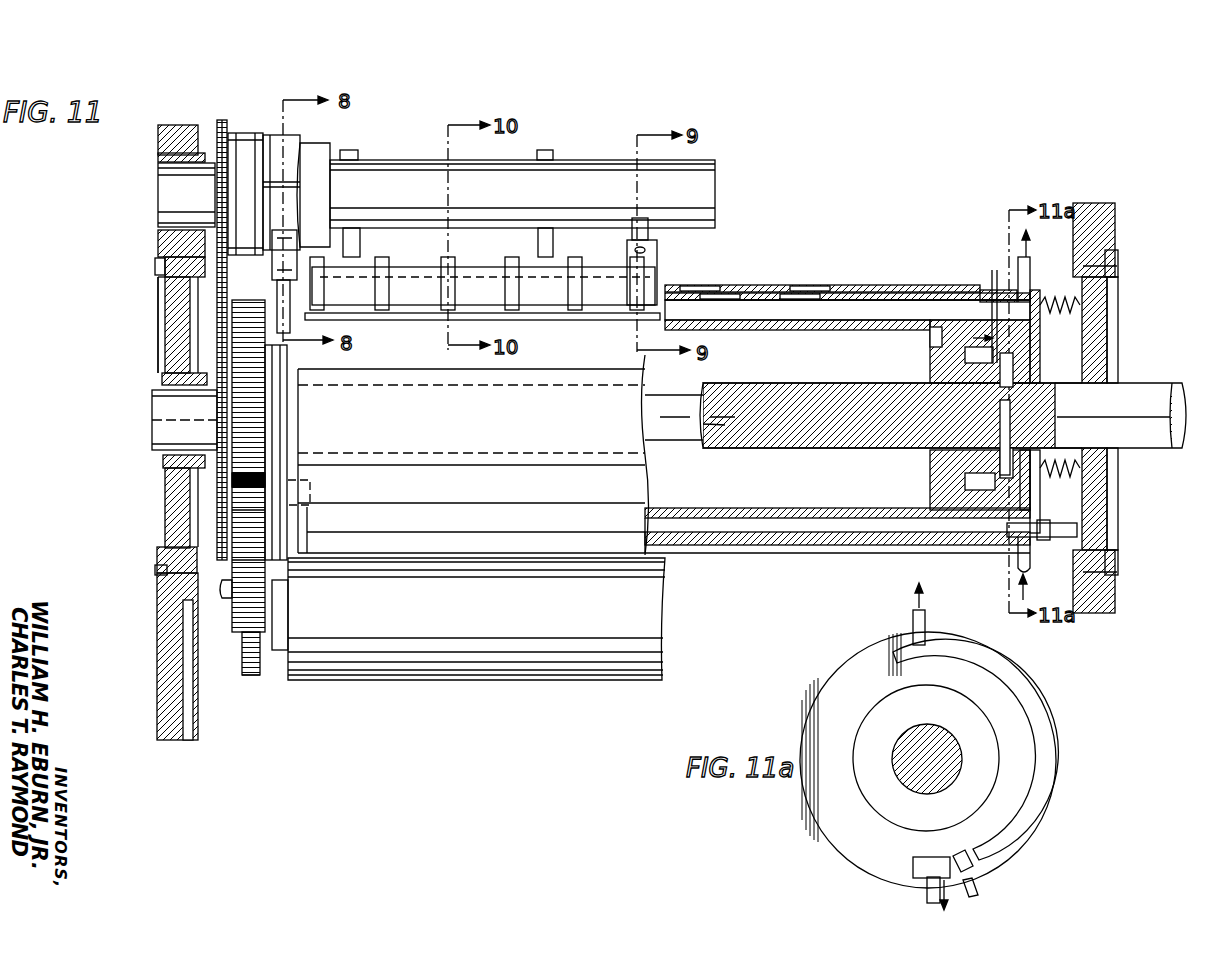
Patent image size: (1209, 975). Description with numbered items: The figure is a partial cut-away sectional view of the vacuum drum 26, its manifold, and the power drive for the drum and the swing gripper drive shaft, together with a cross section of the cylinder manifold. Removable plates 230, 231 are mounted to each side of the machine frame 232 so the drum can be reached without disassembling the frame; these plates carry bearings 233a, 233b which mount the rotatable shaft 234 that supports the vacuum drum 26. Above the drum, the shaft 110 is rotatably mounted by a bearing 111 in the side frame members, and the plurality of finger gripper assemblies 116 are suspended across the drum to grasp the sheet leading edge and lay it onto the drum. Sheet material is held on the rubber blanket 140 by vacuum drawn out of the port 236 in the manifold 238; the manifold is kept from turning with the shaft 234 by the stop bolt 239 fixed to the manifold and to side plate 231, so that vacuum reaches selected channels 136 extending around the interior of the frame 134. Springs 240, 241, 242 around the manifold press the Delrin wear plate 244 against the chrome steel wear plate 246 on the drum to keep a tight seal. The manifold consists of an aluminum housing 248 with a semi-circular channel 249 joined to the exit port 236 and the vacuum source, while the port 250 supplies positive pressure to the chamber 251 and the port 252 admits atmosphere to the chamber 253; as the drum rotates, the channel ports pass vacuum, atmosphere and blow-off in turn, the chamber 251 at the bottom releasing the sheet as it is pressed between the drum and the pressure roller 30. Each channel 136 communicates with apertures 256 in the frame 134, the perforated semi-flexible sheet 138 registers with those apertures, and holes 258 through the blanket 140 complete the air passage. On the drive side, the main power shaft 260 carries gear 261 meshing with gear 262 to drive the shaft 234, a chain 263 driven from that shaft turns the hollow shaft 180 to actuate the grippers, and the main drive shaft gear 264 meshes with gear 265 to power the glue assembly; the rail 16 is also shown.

In FIG. 11, the rail 16 is at (380, 312).
In FIG. 11, the vacuum drum 26 is at (837, 388).
In FIG. 11, the pressure roller 30 is at (500, 681).
In FIG. 11, the shaft 110 is at (546, 194).
In FIG. 11, the bearing 111 is at (160, 152).
In FIG. 11, the finger gripper assembly 116 is at (577, 312).
In FIG. 11, the frame 134 is at (900, 332).
In FIG. 11, the channel 136 is at (926, 322).
In FIG. 11, the semi-flexible sheet 138 is at (680, 300).
In FIG. 11, the rubber blanket 140 is at (735, 284).
In FIG. 11, the hollow shaft 180 is at (204, 200).
In FIG. 11, the removable plate 230 is at (162, 345).
In FIG. 11, the removable plate 231 is at (1110, 333).
In FIG. 11, the machine frame 232 is at (160, 240).
In FIG. 11, the bearing 233a is at (165, 382).
In FIG. 11, the bearing 233b is at (1153, 405).
In FIG. 11, the rotatable shaft 234 is at (165, 428).
In FIG. 11A, the rotatable shaft 234 is at (945, 746).
In FIG. 11, the port 236 is at (1031, 268).
In FIG. 11A, the port 236 is at (926, 622).
In FIG. 11, the manifold 238 is at (1036, 330).
In FIG. 11A, the manifold 238 is at (845, 664).
In FIG. 11, the stop bolt 239 is at (1052, 542).
In FIG. 11, the spring 240 is at (1060, 480).
In FIG. 11, the spring 241 is at (1060, 297).
In FIG. 11, the spring 242 is at (1095, 362).
In FIG. 11, the wear plate 244 is at (994, 290).
In FIG. 11, the wear plate 246 is at (990, 300).
In FIG. 11A, the aluminum housing 248 is at (840, 848).
In FIG. 11A, the semi-circular channel 249 is at (1030, 728).
In FIG. 11, the port 250 is at (1031, 576).
In FIG. 11A, the port 250 is at (927, 893).
In FIG. 11A, the chamber 251 is at (912, 868).
In FIG. 11A, the port 252 is at (978, 888).
In FIG. 11A, the chamber 253 is at (955, 858).
In FIG. 11, the aperture 256 is at (858, 300).
In FIG. 11, the hole 258 is at (808, 284).
In FIG. 11, the main power shaft 260 is at (228, 598).
In FIG. 11, the gear 261 is at (255, 530).
In FIG. 11, the gear 262 is at (252, 430).
In FIG. 11, the chain 263 is at (214, 405).
In FIG. 11, the main drive shaft gear 264 is at (242, 655).
In FIG. 11, the gear 265 is at (250, 680).